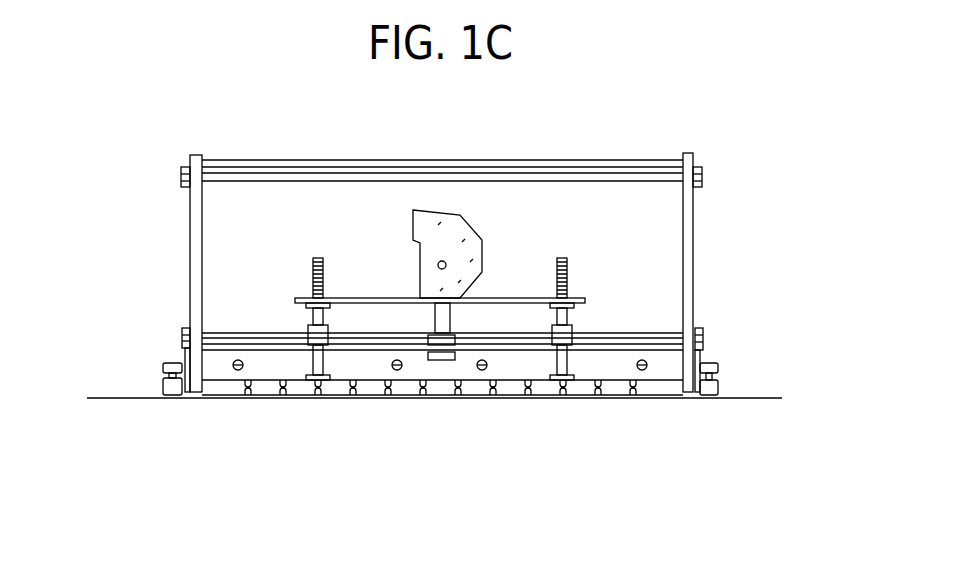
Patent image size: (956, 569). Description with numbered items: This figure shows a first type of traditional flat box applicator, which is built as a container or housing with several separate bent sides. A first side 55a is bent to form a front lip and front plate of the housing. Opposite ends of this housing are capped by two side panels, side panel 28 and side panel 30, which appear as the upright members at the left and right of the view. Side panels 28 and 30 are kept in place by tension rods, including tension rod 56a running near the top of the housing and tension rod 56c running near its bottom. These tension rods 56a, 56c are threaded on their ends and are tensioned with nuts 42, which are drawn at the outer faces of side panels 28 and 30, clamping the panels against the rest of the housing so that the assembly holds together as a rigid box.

The side panel 28 is at (693, 218).
The side panel 30 is at (190, 252).
The nuts 42 is at (182, 340).
The first side 55a is at (658, 187).
The tension rod 56a is at (531, 187).
The tension rod 56c is at (503, 350).